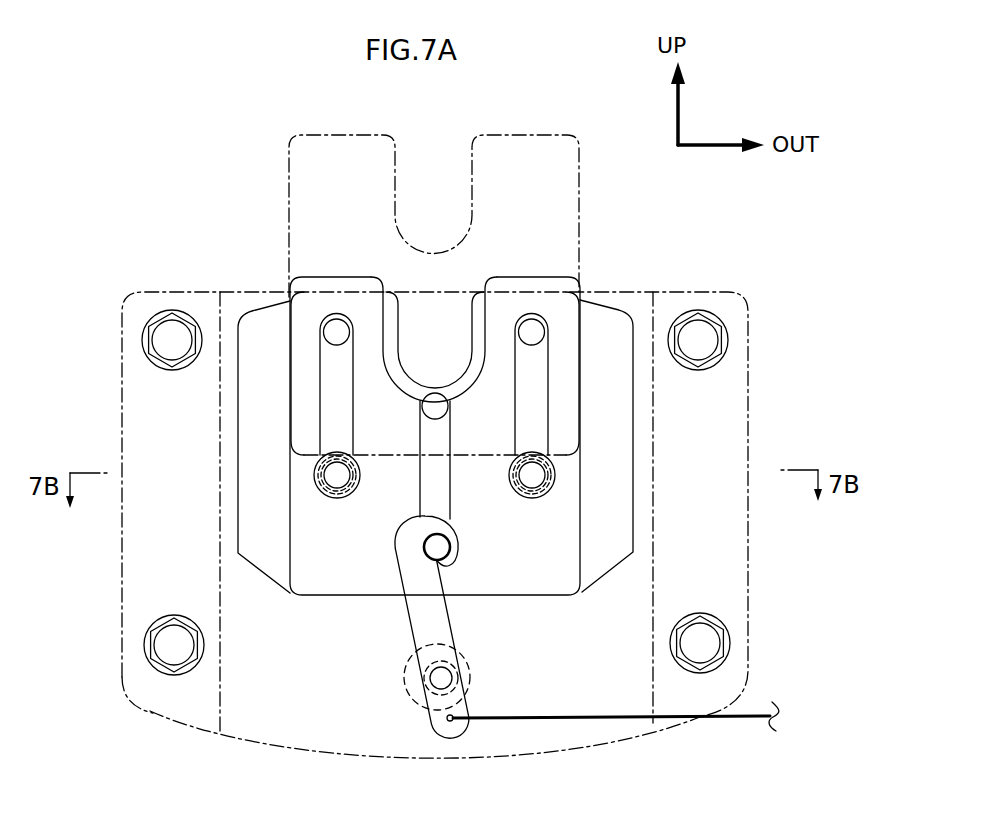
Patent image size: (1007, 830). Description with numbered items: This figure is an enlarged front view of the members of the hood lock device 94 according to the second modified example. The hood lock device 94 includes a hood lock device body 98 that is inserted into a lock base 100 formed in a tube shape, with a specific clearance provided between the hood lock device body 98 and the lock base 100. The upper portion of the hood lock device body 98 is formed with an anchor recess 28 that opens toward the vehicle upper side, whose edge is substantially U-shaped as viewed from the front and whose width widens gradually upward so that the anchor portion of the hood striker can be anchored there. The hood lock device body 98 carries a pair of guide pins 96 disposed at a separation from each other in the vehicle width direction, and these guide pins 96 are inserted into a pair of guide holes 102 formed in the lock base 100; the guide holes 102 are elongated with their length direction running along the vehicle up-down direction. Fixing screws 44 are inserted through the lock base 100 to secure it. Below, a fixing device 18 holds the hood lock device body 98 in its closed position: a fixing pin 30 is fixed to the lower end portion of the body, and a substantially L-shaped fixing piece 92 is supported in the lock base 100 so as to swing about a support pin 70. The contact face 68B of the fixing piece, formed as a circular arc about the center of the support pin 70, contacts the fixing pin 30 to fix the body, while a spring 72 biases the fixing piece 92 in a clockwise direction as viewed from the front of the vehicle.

The hood lock device 94 is at (203, 226).
The hood lock device body 98 is at (506, 272).
The lock base 100 is at (654, 284).
The anchor recess 28 is at (413, 387).
The fixing screws 44 is at (157, 364).
The guide holes 102 is at (548, 413).
The guide pins 96 is at (314, 478).
The contact face 68B is at (417, 527).
The fixing pin 30 is at (452, 532).
The fixing piece 92 is at (422, 641).
The support pin 70 is at (444, 678).
The spring 72 is at (470, 681).
The fixing device 18 is at (432, 745).